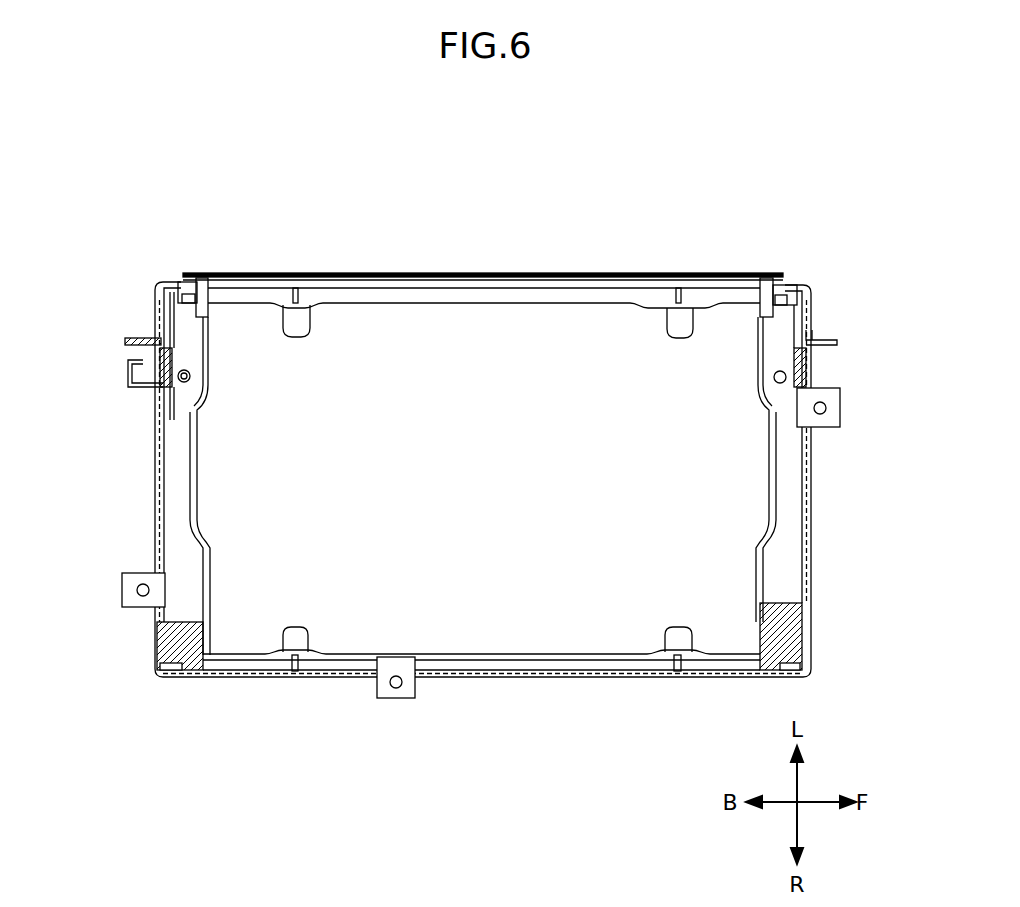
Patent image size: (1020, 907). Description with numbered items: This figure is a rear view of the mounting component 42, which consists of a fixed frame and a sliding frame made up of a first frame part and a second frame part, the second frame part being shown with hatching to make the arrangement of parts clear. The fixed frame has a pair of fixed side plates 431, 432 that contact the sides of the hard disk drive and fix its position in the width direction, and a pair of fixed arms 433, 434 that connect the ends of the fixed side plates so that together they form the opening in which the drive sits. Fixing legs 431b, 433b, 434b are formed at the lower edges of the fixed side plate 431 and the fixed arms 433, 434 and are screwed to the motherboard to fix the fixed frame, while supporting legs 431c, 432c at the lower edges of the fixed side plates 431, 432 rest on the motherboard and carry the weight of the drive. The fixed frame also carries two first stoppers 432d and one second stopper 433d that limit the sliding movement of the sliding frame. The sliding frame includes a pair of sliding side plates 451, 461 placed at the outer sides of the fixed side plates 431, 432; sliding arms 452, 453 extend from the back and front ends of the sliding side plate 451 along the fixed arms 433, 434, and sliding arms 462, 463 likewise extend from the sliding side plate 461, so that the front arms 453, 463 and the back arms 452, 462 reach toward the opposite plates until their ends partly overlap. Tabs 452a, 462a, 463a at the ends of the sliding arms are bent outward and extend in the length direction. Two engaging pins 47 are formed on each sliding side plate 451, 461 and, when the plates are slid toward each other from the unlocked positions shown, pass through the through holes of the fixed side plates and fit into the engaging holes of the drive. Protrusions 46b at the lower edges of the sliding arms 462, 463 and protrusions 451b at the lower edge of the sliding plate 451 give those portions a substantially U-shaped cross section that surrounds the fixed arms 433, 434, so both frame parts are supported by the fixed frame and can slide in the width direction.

The mounting component 42 is at (504, 162).
The engaging pins 47 is at (297, 296).
The protrusions 46b is at (173, 368).
The fixed side plate 431 is at (487, 654).
The fixing leg 431b is at (396, 700).
The supporting legs 431c is at (297, 632).
The fixed side plate 432 is at (437, 304).
The supporting legs 432c is at (297, 330).
The first stoppers 432d is at (202, 307).
The fixed arm 433 is at (198, 452).
The fixing leg 433b is at (142, 610).
The second stopper 433d is at (174, 404).
The fixed arm 434 is at (768, 465).
The fixing leg 434b is at (836, 408).
The sliding side plate 451 is at (414, 277).
The protrusions 451b is at (184, 292).
The sliding arm 452 is at (156, 302).
The tab 452a is at (127, 375).
The sliding arm 453 is at (812, 303).
The sliding side plate 461 is at (478, 676).
The sliding arm 462 is at (156, 456).
The tab 462a is at (126, 341).
The sliding arm 463 is at (809, 488).
The tab 463a is at (834, 342).